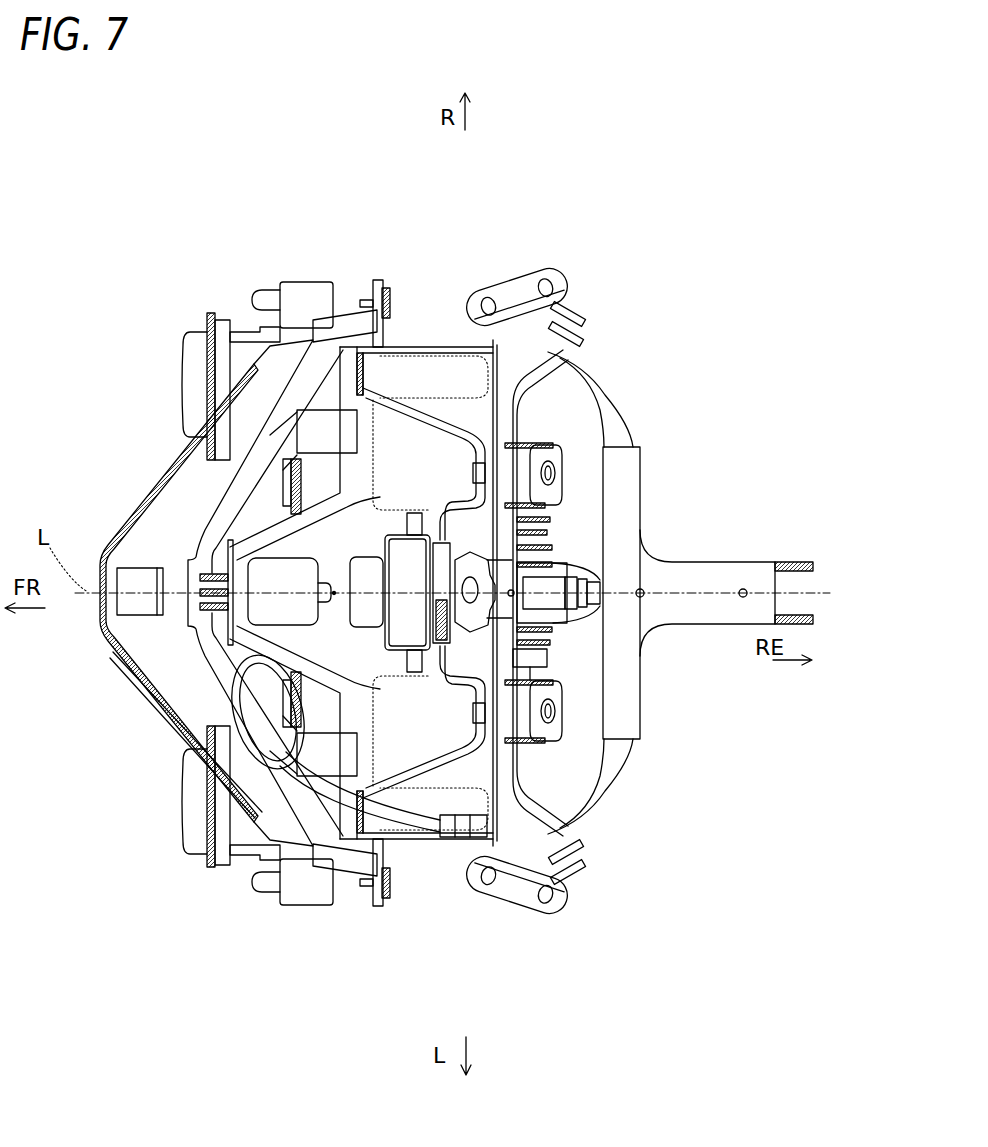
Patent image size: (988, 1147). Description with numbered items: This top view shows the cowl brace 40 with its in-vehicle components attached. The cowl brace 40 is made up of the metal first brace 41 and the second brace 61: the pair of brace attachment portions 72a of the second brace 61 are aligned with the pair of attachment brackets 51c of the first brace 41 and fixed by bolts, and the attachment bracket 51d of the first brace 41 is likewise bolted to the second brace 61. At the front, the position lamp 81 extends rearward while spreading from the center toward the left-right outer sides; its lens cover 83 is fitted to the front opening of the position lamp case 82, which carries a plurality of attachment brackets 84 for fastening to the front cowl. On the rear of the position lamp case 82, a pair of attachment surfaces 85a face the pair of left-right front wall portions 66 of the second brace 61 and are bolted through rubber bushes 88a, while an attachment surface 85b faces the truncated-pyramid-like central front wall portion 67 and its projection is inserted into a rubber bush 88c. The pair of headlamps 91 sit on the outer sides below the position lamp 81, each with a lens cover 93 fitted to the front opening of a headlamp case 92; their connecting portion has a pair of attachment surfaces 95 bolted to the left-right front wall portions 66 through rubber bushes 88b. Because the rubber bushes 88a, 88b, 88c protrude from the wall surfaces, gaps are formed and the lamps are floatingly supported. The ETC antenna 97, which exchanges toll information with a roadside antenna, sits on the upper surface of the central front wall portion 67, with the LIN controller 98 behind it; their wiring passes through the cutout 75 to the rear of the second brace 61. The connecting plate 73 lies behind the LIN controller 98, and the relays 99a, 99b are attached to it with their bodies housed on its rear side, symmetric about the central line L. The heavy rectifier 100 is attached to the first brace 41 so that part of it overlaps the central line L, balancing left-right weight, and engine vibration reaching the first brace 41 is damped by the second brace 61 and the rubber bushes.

The cowl brace 40 is at (576, 193).
The first brace 41 is at (648, 352).
The attachment brackets 51c is at (517, 440).
The attachment bracket 51d is at (570, 560).
The second brace 61 is at (432, 275).
The left-right front wall portions 66 is at (305, 280).
The central front wall portion 67 is at (197, 622).
The brace attachment portions 72a is at (477, 360).
The connecting plate 73 is at (440, 510).
The cutout 75 is at (406, 526).
The position lamp 81 is at (120, 534).
The position lamp case 82 is at (180, 730).
The lens cover 83 is at (157, 693).
The attachment brackets 84 is at (385, 285).
The attachment surfaces 85a is at (378, 458).
The attachment surface 85b is at (282, 557).
The rubber bushes 88a is at (422, 414).
The rubber bushes 88b is at (385, 380).
The rubber bush 88c is at (265, 622).
The headlamps 91 is at (184, 349).
The headlamp case 92 is at (222, 322).
The lens cover 93 is at (207, 335).
The attachment surfaces 95 is at (373, 360).
The ETC antenna 97 is at (368, 580).
The LIN controller 98 is at (472, 645).
The relay 99a is at (556, 468).
The relay 99b is at (547, 658).
The rectifier 100 is at (550, 520).